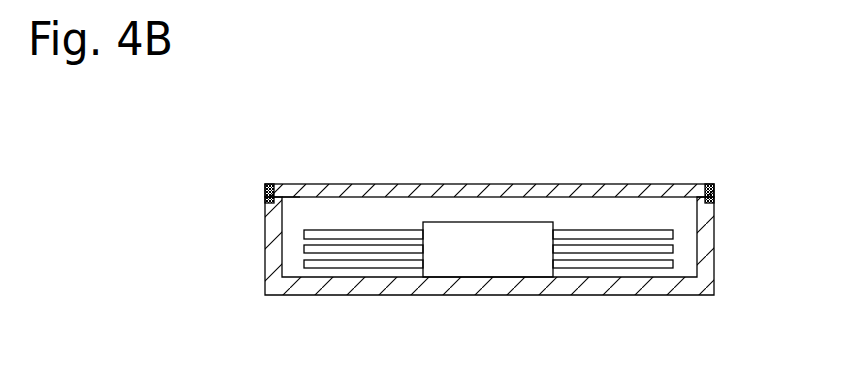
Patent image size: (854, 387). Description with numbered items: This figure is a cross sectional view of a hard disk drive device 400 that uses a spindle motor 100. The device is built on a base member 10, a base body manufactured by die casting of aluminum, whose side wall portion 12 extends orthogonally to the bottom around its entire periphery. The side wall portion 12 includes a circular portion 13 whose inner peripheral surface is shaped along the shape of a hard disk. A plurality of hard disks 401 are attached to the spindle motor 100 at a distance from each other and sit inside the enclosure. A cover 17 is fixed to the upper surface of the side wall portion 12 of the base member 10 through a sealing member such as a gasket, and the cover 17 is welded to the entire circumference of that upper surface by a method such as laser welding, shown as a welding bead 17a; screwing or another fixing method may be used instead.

The hard disk drive device 400 is at (744, 170).
The base member 10 is at (714, 242).
The side wall portion 12 is at (265, 252).
The circular portion 13 is at (297, 184).
The cover 17 is at (407, 184).
The welding bead 17a is at (271, 184).
The spindle motor 100 is at (507, 260).
The hard disks 401 is at (605, 268).